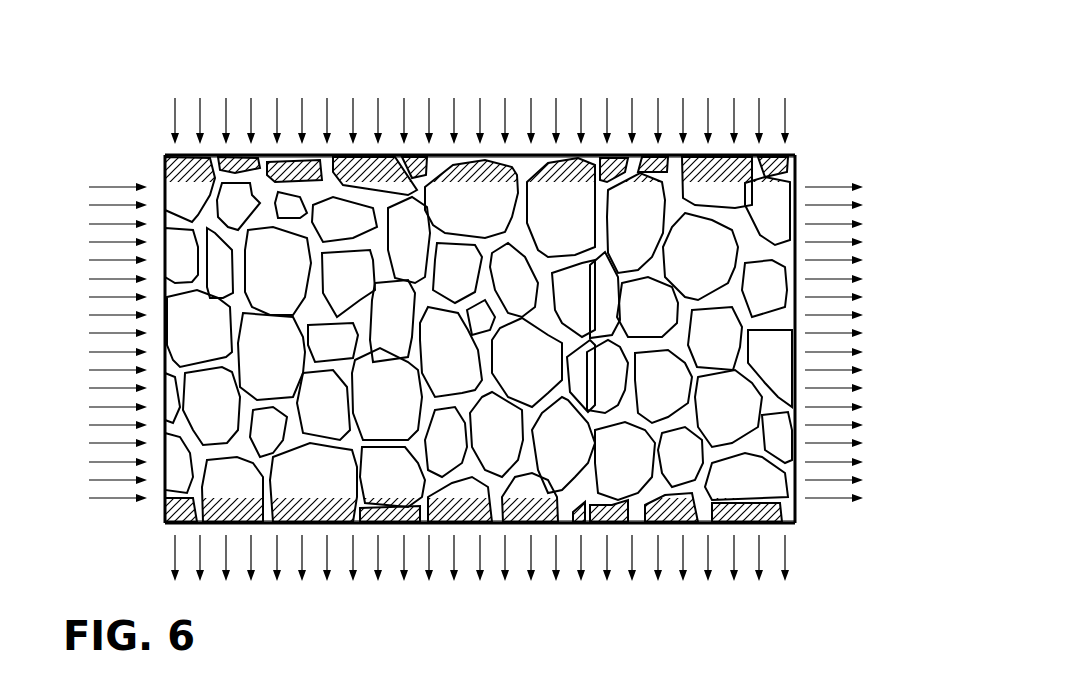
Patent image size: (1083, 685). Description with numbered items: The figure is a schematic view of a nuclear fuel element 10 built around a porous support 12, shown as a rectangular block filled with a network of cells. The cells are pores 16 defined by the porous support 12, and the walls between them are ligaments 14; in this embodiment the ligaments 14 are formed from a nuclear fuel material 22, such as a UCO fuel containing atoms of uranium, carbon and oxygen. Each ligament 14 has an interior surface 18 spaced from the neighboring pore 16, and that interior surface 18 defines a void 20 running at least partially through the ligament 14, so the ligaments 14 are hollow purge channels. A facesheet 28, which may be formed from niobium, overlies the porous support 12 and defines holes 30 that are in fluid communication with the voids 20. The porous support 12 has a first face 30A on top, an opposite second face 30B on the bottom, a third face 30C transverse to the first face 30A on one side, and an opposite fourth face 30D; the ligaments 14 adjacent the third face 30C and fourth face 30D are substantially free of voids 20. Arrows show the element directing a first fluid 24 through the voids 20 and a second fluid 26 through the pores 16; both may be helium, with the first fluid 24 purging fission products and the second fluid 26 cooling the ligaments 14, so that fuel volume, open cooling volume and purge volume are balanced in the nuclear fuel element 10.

The nuclear fuel element 10 is at (812, 80).
The porous support 12 is at (806, 163).
The ligament 14 is at (765, 213).
The pore 16 is at (635, 213).
The interior surface 18 is at (193, 445).
The void 20 is at (183, 455).
The nuclear fuel material 22 is at (420, 152).
The first fluid 24 is at (378, 113).
The second fluid 26 is at (110, 318).
The facesheet 28 is at (705, 170).
The hole 30 is at (265, 155).
The first face 30A is at (522, 142).
The second face 30B is at (466, 538).
The third face 30C is at (155, 270).
The fourth face 30D is at (808, 270).